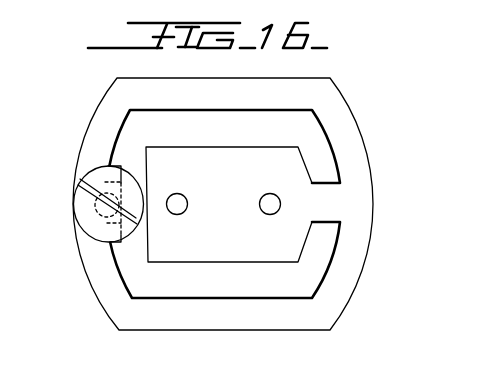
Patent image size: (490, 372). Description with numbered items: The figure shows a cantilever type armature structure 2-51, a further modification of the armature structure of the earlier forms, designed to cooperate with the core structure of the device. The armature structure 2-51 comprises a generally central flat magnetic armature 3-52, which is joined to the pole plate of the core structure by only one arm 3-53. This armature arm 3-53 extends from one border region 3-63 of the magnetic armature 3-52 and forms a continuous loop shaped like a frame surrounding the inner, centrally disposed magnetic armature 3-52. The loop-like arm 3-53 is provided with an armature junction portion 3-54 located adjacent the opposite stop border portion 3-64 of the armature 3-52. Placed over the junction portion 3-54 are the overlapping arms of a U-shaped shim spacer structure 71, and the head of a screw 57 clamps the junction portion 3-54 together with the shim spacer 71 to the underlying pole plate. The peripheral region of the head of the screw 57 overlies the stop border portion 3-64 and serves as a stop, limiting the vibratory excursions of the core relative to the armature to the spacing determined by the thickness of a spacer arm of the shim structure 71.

The armature structure 2-51 is at (80, 123).
The armature arm 3-53 is at (194, 86).
The magnetic armature 3-52 is at (248, 210).
The border region 3-63 is at (327, 202).
The screw 57 is at (88, 217).
The shim spacer structure 71 is at (97, 242).
The stop border portion 3-64 is at (123, 190).
The armature junction portion 3-54 is at (115, 183).